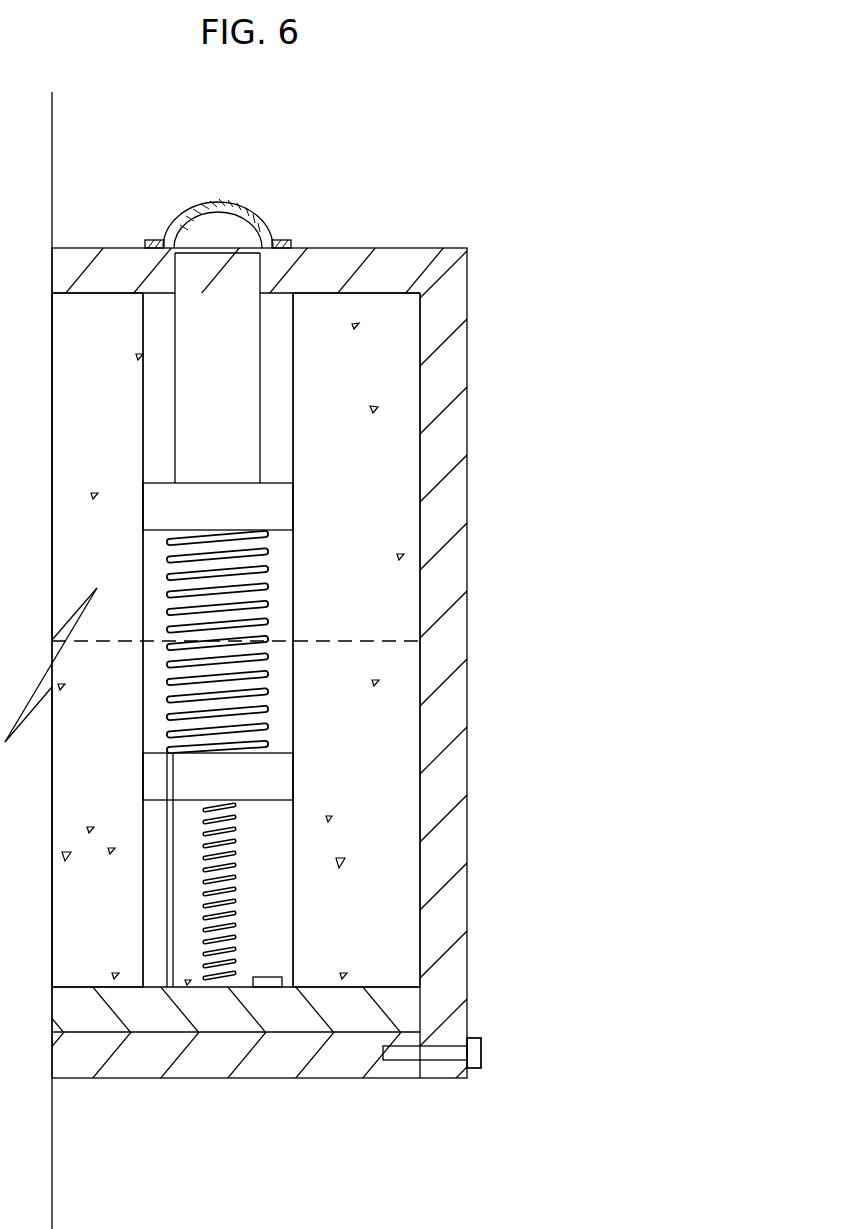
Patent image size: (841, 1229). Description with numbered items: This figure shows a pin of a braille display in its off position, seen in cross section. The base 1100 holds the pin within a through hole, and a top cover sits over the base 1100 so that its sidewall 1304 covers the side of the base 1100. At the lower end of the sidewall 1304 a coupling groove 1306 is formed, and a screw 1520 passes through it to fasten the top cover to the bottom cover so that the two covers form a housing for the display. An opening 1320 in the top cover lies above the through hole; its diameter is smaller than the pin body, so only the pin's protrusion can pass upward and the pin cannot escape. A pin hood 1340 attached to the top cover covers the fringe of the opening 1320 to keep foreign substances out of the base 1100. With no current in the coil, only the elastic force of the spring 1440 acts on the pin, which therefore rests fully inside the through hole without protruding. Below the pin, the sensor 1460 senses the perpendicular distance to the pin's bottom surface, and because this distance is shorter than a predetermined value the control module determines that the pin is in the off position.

The base 1100 is at (387, 551).
The sidewall 1304 is at (282, 649).
The coupling groove 1306 is at (460, 1040).
The opening 1320 is at (420, 264).
The pin hood 1340 is at (233, 238).
The spring 1440 is at (192, 987).
The sensor 1460 is at (268, 987).
The screw 1520 is at (392, 1062).